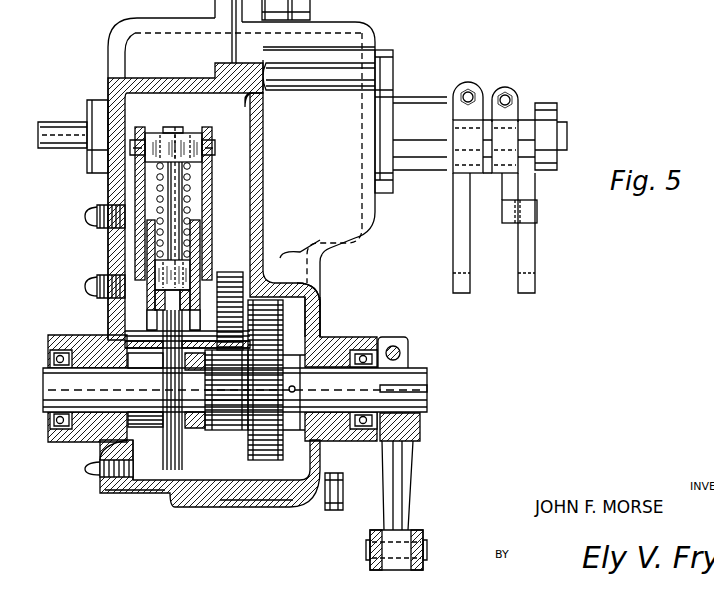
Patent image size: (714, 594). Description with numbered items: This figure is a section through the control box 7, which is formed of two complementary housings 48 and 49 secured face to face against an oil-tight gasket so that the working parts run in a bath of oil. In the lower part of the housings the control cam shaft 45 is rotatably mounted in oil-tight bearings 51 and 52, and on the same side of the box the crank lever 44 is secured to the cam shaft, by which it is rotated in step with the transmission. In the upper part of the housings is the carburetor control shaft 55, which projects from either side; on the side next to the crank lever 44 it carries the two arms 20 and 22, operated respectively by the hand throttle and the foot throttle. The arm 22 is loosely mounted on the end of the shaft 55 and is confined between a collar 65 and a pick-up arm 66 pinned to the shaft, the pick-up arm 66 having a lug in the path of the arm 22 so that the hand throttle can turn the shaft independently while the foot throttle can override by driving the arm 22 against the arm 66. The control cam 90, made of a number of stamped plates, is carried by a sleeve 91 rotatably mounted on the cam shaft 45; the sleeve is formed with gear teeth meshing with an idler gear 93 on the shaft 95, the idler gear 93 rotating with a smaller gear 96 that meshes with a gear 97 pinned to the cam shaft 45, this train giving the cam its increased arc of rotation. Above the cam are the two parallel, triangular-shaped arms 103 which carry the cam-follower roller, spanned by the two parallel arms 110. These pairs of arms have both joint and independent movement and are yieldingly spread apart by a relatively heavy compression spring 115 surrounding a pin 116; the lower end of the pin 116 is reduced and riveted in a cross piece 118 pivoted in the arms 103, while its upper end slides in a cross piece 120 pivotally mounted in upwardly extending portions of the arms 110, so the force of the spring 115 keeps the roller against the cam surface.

The box 7 is at (372, 214).
The housing 48 is at (137, 183).
The carburetor control shaft 55 is at (75, 150).
The parallel arms 110 is at (112, 185).
The cross piece 120 is at (190, 140).
The pin 116 is at (182, 200).
The compression spring 115 is at (190, 196).
The triangular-shaped arms 103 is at (204, 214).
The cross piece 118 is at (181, 268).
The shaft 95 is at (140, 326).
The idler gear 93 is at (229, 275).
The housing 49 is at (318, 291).
The smaller gear 96 is at (292, 313).
The bearing 51 is at (330, 357).
The control cam shaft 45 is at (396, 373).
The bearing 52 is at (73, 441).
The sleeve 91 is at (190, 421).
The gear 97 is at (262, 456).
The control cam 90 is at (158, 470).
The crank lever 44 is at (411, 460).
The collar 65 is at (547, 101).
The arm 20 is at (457, 238).
The arm 22 is at (531, 244).
The pick-up arm 66 is at (509, 214).